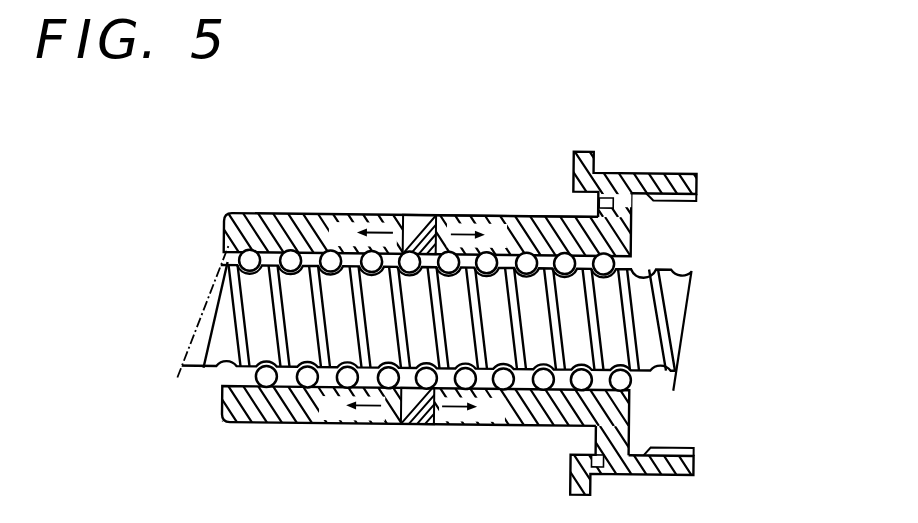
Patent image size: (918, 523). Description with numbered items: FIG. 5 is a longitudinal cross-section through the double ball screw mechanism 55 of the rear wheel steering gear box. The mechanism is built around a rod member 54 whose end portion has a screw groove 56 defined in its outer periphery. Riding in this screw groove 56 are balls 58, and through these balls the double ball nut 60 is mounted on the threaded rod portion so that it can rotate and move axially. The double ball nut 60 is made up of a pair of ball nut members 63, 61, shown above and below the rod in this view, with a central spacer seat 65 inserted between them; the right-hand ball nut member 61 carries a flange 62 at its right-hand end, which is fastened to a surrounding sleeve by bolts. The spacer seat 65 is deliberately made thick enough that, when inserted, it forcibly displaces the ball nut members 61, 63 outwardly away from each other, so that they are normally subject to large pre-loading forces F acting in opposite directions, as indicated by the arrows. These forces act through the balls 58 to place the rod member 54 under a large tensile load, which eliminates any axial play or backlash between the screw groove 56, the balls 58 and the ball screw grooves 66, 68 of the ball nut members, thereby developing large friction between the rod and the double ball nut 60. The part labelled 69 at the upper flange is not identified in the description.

The rod member 54 is at (467, 298).
The ball screw mechanism 55 is at (520, 140).
The screw groove 56 is at (645, 317).
The balls 58 is at (422, 192).
The double ball nut 60 is at (282, 422).
The ball nut member 61 is at (477, 212).
The flange 62 is at (628, 428).
The ball nut member 63 is at (365, 213).
The spacer seat 65 is at (418, 213).
The ball screw groove 66 is at (529, 213).
The ball screw groove 68 is at (249, 250).
The upper flange 69 is at (675, 173).